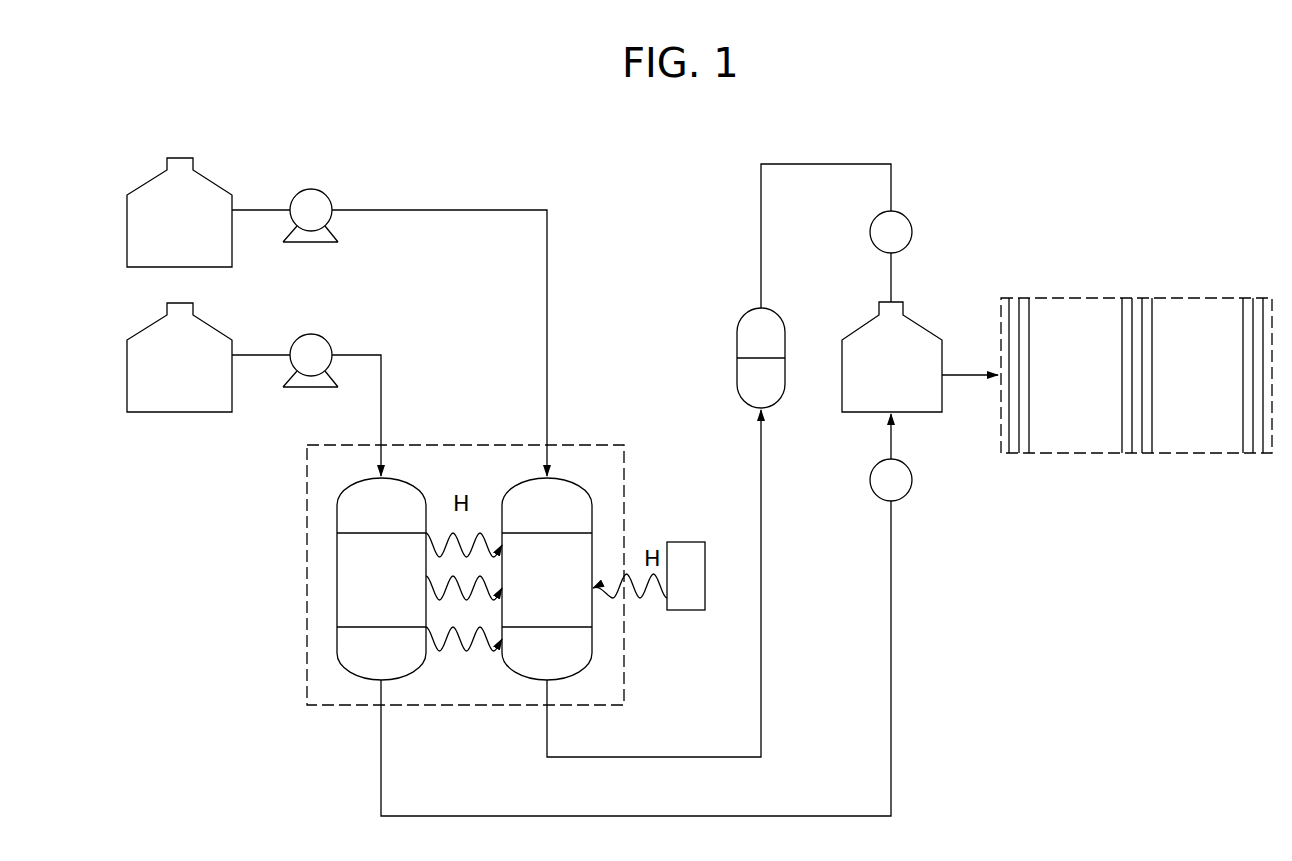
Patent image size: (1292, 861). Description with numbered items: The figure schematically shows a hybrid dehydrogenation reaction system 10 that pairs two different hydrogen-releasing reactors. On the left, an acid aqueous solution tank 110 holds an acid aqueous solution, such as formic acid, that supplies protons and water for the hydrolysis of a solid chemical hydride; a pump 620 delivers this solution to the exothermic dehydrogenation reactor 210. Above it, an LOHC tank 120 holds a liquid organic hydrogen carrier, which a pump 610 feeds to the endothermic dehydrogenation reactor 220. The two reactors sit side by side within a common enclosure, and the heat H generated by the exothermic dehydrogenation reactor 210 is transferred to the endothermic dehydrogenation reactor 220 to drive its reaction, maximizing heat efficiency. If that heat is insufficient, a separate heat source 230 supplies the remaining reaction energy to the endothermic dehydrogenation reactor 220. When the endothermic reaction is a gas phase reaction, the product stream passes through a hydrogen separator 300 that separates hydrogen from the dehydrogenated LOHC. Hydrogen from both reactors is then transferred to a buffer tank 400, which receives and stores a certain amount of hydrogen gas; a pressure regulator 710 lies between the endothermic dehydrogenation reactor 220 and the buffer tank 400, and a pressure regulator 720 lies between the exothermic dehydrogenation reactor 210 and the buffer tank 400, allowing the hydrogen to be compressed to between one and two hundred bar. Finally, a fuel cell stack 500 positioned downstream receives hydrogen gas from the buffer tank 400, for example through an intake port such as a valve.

The hybrid dehydrogenation reaction system 10 is at (513, 131).
The acid aqueous solution tank 110 is at (131, 330).
The LOHC tank 120 is at (131, 185).
The exothermic dehydrogenation reactor 210 is at (355, 684).
The endothermic dehydrogenation reactor 220 is at (520, 684).
The heat source 230 is at (685, 539).
The hydrogen separator 300 is at (737, 305).
The buffer tank 400 is at (850, 328).
The fuel cell stack 500 is at (1139, 291).
The pump 610 is at (295, 185).
The pump 620 is at (295, 330).
The pressure regulator 710 is at (907, 210).
The pressure regulator 720 is at (911, 504).